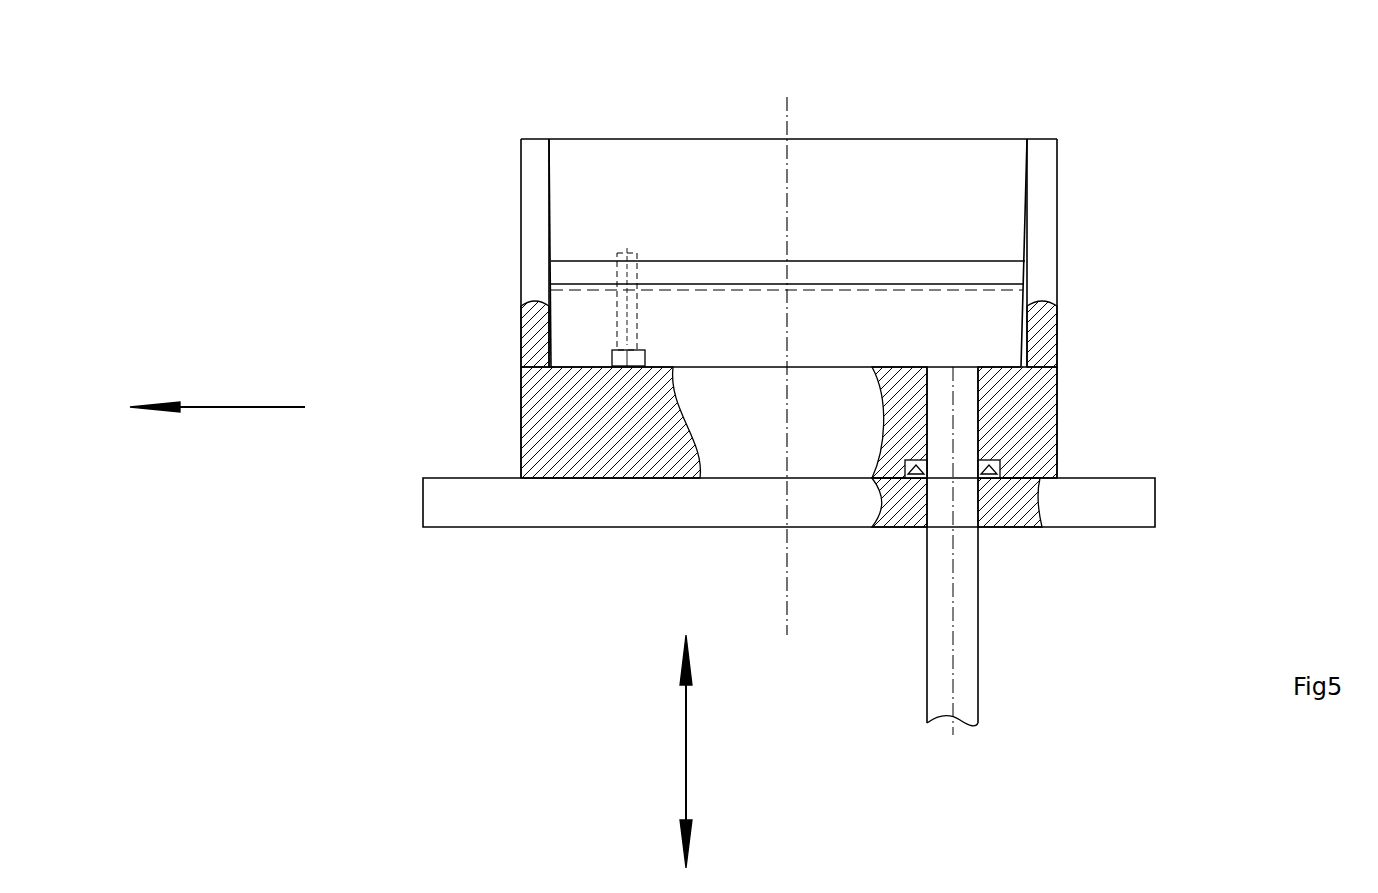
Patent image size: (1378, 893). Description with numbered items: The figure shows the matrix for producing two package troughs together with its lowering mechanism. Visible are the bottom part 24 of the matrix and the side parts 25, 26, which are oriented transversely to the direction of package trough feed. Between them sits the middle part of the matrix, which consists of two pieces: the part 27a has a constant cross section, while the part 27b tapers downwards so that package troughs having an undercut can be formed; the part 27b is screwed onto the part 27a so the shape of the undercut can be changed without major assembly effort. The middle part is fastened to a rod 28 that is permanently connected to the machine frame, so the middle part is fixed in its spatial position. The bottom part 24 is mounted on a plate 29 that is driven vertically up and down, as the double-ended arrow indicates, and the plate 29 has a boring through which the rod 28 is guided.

The bottom part 24 is at (752, 445).
The side part 25 is at (533, 208).
The side part 26 is at (1045, 255).
The middle part portion with constant cross section 27a is at (741, 330).
The downwardly tapering middle part portion 27b is at (831, 208).
The rod 28 is at (953, 618).
The plate 29 is at (470, 503).